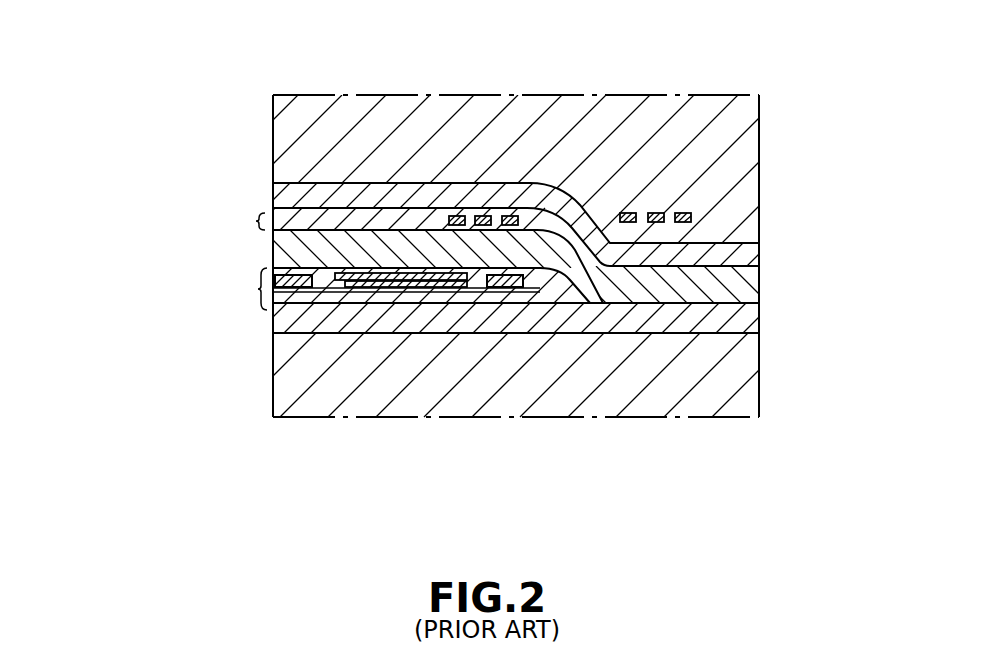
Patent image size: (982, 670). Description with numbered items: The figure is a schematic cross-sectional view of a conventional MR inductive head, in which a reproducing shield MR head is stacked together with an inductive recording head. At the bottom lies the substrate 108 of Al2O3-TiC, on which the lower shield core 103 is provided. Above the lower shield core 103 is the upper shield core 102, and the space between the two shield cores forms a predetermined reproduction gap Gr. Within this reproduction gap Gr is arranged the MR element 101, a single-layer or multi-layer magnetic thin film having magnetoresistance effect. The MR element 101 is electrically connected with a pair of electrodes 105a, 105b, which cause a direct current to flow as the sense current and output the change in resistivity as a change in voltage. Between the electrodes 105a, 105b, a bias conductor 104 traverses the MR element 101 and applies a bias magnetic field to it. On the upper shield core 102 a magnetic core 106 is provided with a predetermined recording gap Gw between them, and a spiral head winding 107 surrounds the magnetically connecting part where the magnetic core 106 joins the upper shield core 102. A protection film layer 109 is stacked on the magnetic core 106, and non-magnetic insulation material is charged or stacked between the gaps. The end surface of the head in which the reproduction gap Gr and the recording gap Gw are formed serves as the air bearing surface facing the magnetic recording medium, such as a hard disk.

The MR element 101 is at (467, 285).
The upper shield core 102 is at (410, 240).
The lower shield core 103 is at (708, 322).
The bias conductor 104 is at (388, 290).
The electrode 105a is at (292, 296).
The electrode 105b is at (497, 290).
The magnetic core 106 is at (298, 192).
The head winding 107 is at (788, 157).
The substrate 108 is at (745, 380).
The protection film layer 109 is at (667, 102).
The recording gap Gw is at (194, 240).
The reproduction gap Gr is at (175, 302).